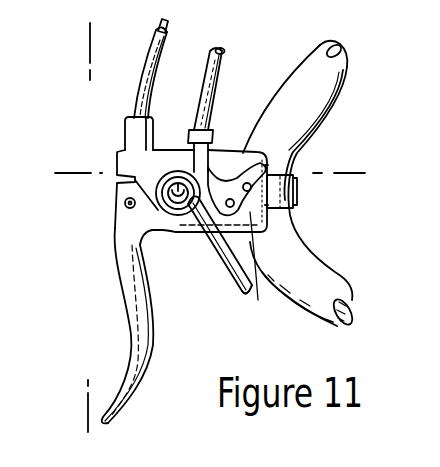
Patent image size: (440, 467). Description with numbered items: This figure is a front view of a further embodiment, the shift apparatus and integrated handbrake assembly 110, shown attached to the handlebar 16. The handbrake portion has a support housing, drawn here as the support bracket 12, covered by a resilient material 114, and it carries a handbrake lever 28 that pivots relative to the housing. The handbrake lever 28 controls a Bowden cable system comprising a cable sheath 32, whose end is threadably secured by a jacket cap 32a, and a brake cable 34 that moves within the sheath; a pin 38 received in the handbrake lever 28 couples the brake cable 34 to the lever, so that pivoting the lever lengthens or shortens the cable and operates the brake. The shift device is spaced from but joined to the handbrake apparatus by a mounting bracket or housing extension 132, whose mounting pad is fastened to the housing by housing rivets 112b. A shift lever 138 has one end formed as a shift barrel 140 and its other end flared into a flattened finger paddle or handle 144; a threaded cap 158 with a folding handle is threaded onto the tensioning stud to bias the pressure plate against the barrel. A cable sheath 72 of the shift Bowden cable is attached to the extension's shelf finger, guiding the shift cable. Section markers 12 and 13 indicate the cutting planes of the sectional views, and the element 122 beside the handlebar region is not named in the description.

The support bracket 12 is at (84, 29).
The section line 13- 13 is at (63, 164).
The handlebar 16 is at (297, 78).
The handbrake lever 28 is at (140, 322).
The cable sheath 32 is at (137, 73).
The jacket cap 32a is at (147, 117).
The brake cable 34 is at (162, 25).
The pin 38 is at (125, 204).
The cable sheath 72 is at (199, 48).
The shift apparatus and integrated handbrake assembly 110 is at (191, 233).
The housing rivets 112b is at (262, 170).
The resilient material 114 is at (157, 170).
The block 122 is at (290, 192).
The mounting bracket or housing extension 132 is at (212, 165).
The shift lever 138 is at (197, 235).
The shift barrel 140 is at (163, 203).
The finger paddle or handle 144 is at (238, 295).
The threaded cap 158 is at (178, 198).